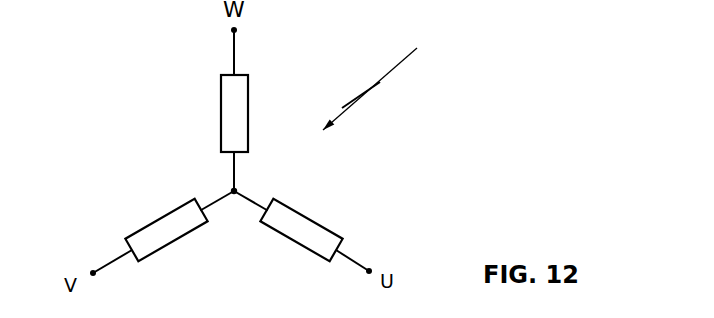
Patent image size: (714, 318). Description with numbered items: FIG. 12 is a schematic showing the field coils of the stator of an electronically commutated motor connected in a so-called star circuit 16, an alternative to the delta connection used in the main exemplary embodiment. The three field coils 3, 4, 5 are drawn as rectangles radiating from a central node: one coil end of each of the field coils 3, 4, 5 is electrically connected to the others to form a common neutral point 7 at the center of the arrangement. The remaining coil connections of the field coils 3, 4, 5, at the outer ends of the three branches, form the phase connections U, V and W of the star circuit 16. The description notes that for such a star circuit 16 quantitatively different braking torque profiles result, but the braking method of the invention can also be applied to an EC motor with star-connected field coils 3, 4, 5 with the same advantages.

The field coil 3 is at (295, 223).
The field coil 4 is at (162, 229).
The field coil 5 is at (230, 102).
The common neutral point 7 is at (236, 189).
The star circuit 16 is at (382, 78).